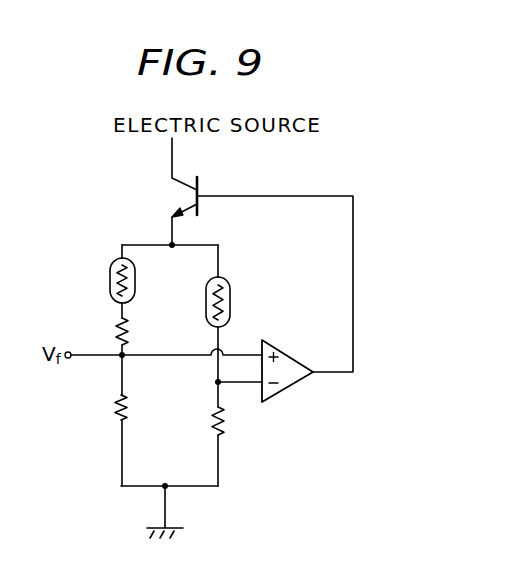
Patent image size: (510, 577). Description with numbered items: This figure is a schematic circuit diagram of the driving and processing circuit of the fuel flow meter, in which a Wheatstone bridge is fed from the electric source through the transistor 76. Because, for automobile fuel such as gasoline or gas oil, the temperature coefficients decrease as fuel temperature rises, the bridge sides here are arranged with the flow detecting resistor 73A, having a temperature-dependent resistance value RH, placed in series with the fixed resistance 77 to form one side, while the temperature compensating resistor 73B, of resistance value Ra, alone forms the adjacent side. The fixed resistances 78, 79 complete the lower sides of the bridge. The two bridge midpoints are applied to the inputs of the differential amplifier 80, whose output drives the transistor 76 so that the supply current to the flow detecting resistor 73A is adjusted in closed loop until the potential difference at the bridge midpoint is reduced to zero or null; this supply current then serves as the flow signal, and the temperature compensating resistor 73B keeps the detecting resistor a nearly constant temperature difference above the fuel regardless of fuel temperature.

The transistor 76 is at (222, 163).
The flow detecting resistor 73A is at (110, 275).
The temperature compensating resistor 73B is at (230, 290).
The fixed resistance 77 is at (131, 332).
The fixed resistance 78 is at (113, 411).
The fixed resistance 79 is at (224, 429).
The differential amplifier 80 is at (300, 386).